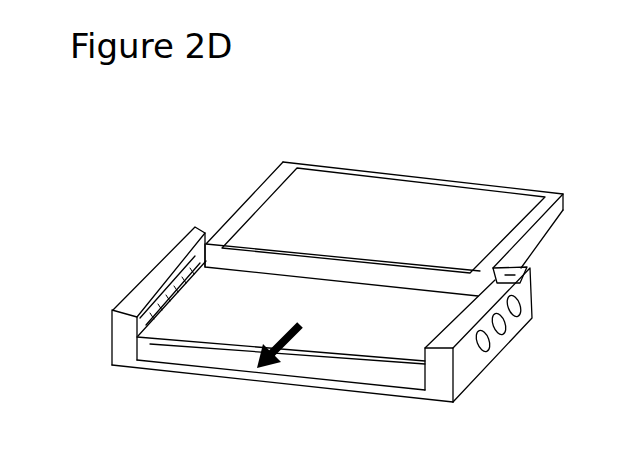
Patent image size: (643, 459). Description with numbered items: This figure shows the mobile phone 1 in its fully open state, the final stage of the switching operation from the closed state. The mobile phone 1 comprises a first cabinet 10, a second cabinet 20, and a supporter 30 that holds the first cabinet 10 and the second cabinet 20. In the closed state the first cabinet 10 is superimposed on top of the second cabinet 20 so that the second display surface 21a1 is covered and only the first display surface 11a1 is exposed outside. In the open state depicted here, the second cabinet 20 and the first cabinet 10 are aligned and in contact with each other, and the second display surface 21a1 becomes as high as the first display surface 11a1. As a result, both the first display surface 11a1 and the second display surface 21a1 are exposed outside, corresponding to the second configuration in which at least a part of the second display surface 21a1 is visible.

The mobile phone 1 is at (246, 140).
The first cabinet 10 is at (517, 187).
The first display surface 11a1 is at (436, 198).
The second cabinet 20 is at (168, 264).
The second display surface 21a1 is at (123, 302).
The supporter 30 is at (540, 279).